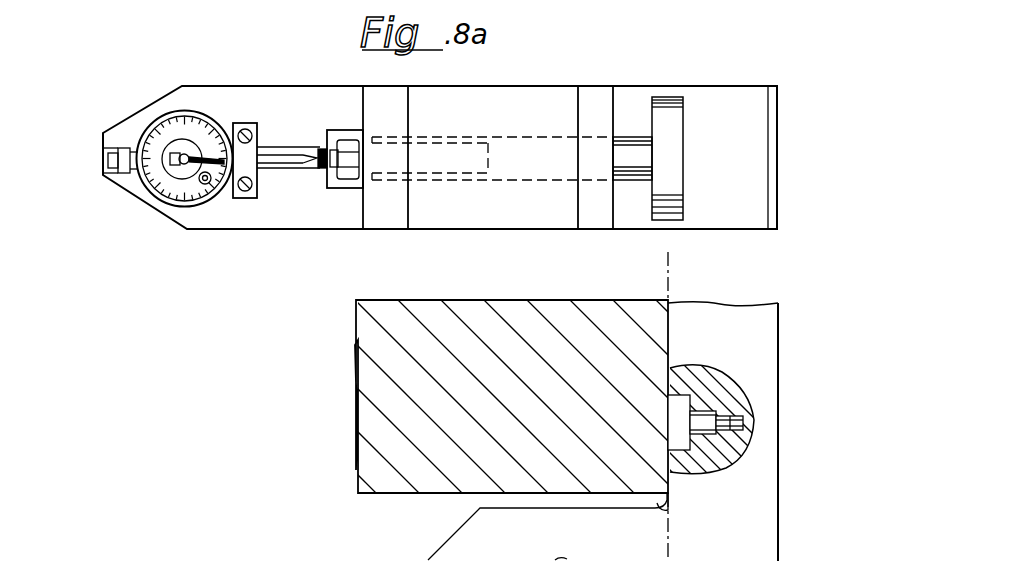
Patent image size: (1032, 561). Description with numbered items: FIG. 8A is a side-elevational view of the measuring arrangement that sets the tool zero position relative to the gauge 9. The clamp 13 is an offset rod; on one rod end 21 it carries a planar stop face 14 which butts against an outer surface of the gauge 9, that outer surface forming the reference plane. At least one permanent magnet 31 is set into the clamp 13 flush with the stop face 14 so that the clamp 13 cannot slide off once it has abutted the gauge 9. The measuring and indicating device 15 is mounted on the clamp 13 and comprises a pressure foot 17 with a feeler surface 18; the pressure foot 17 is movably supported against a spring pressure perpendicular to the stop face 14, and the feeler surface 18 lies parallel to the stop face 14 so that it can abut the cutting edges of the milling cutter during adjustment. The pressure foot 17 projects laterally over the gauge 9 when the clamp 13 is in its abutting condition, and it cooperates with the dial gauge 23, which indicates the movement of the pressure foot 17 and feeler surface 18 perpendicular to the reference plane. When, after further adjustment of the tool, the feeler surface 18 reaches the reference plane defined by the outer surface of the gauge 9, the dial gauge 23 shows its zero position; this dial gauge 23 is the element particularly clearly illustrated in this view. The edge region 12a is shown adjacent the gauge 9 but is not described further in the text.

The gauge 9 is at (417, 470).
The bore edge 12a is at (675, 493).
The clamp 13 is at (777, 159).
The stop face 14 is at (655, 343).
The measuring and indicating device 15 is at (481, 238).
The pressure foot 17 is at (638, 157).
The feeler surface 18 is at (683, 197).
The rod end 21 is at (752, 375).
The dial gauge 23 is at (183, 186).
The permanent magnet 31 is at (681, 434).